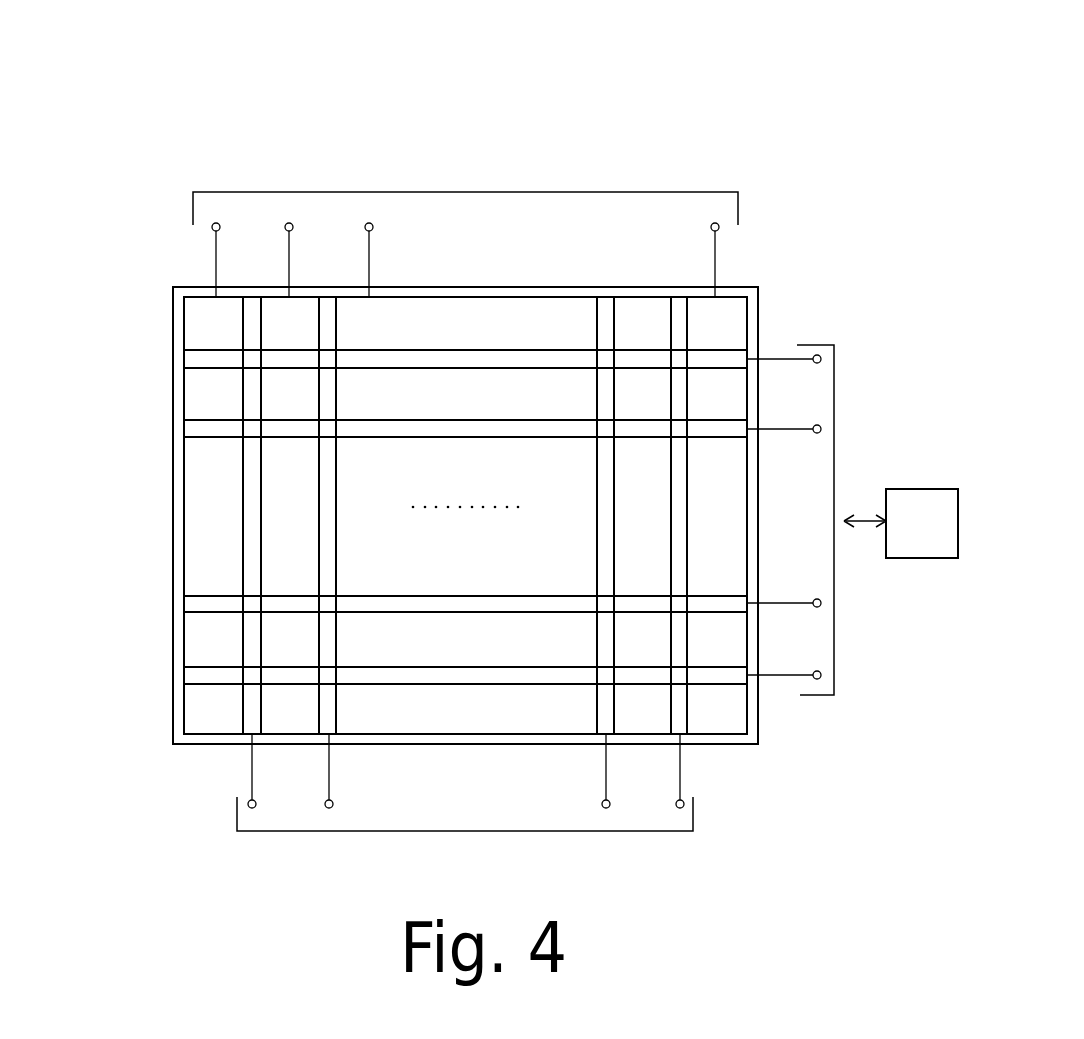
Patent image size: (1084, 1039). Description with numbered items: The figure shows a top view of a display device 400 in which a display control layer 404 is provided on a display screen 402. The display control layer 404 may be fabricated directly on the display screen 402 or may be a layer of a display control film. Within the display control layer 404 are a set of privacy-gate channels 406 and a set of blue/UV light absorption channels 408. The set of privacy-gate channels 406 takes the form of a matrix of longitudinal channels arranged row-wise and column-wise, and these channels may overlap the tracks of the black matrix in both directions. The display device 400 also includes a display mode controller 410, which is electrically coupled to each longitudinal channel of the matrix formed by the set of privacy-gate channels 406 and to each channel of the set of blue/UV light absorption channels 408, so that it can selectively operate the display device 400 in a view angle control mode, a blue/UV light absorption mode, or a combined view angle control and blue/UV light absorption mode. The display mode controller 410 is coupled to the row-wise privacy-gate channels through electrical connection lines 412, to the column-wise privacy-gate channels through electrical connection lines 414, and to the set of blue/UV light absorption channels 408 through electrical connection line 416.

The display device 400 is at (636, 84).
The display screen 402 is at (759, 312).
The display control layer 404 is at (517, 297).
The set of privacy-gate channels 406 is at (318, 512).
The set of blue/UV light absorption channels 408 is at (290, 713).
The display mode controller 410 is at (901, 523).
The electrical connection lines 412 is at (553, 831).
The electrical connection lines 414 is at (834, 395).
The electrical connection line 416 is at (480, 192).